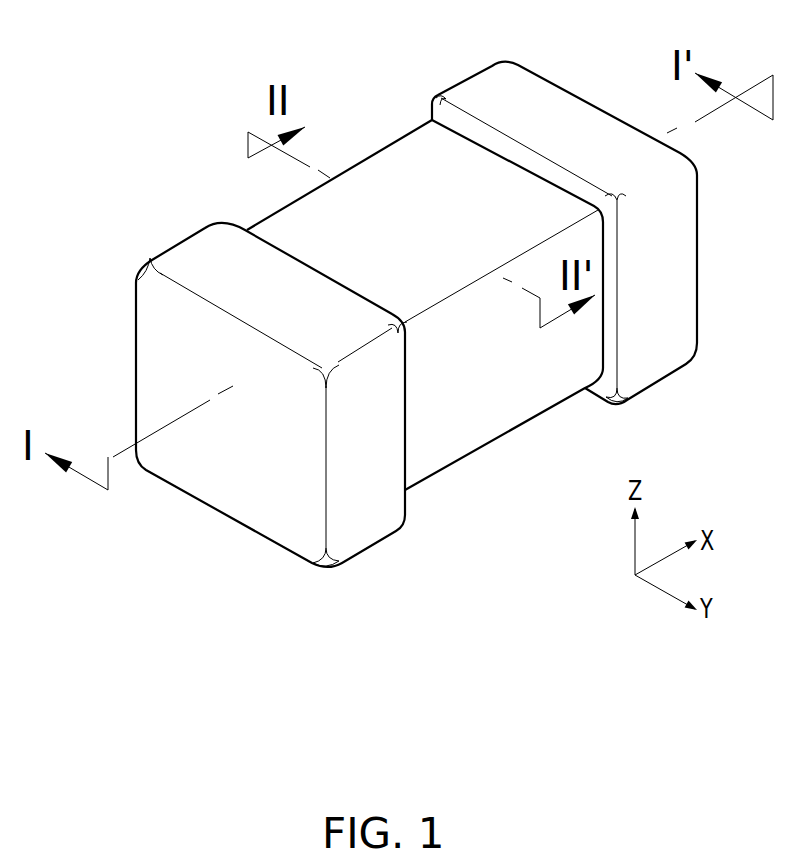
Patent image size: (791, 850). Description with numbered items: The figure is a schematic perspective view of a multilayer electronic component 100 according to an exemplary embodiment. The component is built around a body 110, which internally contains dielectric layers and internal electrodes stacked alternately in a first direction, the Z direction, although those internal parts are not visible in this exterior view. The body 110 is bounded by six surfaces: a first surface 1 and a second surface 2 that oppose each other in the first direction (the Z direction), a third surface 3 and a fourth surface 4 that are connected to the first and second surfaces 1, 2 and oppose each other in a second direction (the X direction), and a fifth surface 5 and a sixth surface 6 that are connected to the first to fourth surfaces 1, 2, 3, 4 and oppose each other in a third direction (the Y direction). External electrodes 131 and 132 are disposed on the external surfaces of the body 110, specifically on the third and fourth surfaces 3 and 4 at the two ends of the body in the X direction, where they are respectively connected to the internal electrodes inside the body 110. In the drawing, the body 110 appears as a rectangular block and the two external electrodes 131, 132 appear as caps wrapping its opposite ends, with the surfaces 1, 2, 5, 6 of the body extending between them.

The multilayer electronic component 100 is at (200, 65).
The body 110 is at (283, 237).
The external electrode 131 is at (198, 255).
The external electrode 132 is at (478, 93).
The first surface 1 is at (460, 410).
The second surface 2 is at (433, 180).
The third surface 3 is at (240, 456).
The fourth surface 4 is at (642, 245).
The fifth surface 5 is at (524, 376).
The sixth surface 6 is at (370, 203).